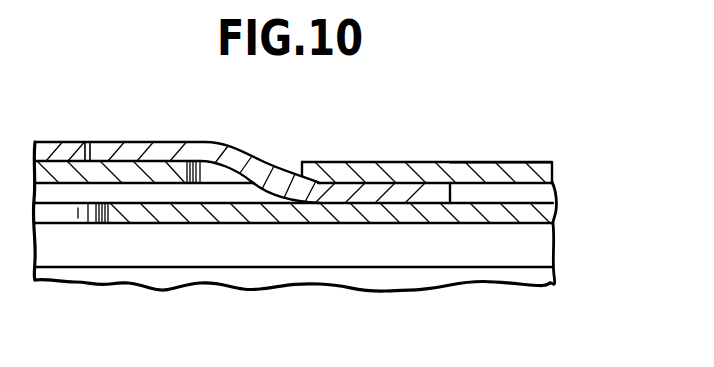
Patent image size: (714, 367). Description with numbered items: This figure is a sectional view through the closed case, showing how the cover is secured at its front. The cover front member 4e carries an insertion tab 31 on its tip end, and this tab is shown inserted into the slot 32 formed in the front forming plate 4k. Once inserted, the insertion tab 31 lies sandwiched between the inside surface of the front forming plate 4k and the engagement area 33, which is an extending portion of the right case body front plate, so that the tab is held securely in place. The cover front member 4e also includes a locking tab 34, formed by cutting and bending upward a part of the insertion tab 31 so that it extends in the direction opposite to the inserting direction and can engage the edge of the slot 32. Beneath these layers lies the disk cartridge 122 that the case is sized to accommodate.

The cover front member 4e is at (70, 145).
The locking tab 34 is at (138, 145).
The slot 32 is at (297, 160).
The insertion tab 31 is at (378, 187).
The front forming plate 4k is at (488, 172).
The engagement area 33 is at (538, 215).
The disk cartridge 122 is at (540, 255).